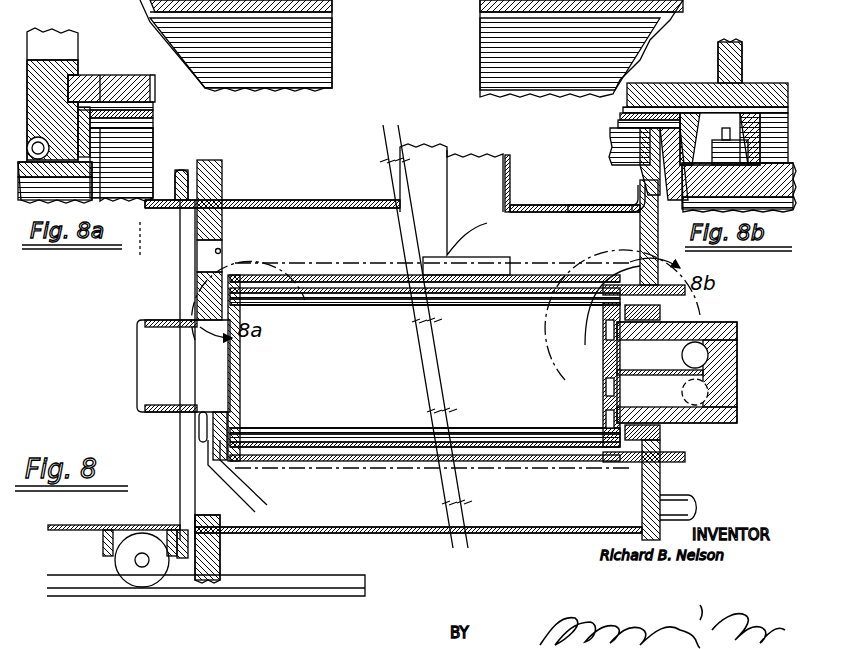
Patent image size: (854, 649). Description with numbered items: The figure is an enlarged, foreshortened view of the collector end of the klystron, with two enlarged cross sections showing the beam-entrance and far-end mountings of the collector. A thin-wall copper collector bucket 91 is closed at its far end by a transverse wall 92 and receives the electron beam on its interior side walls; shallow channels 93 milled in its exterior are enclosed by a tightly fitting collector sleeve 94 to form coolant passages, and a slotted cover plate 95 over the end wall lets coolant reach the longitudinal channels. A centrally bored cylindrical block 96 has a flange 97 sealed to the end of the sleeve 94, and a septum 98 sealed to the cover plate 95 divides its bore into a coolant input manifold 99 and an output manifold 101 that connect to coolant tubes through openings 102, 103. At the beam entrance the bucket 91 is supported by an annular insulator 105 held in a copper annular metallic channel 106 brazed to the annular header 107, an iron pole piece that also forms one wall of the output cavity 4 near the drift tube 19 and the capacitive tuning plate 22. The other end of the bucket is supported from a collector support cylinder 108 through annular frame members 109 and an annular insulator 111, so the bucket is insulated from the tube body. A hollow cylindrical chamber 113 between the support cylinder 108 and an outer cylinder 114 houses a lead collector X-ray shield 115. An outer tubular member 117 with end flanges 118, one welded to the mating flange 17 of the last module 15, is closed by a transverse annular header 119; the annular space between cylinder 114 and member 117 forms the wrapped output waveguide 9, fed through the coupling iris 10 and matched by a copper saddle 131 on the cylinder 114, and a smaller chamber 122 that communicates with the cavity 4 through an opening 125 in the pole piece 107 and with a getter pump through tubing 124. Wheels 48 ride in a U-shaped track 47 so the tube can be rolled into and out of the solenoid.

In FIG. 8, the cavity resonator 4 is at (152, 292).
In FIG. 8, the wrapped output waveguide 9 is at (276, 228).
In FIG. 8, the coupling iris 10 is at (222, 252).
In FIG. 8, the module 15 is at (62, 535).
In FIG. 8, the mating flange 17 is at (180, 562).
In FIG. 8, the drift tube 19 is at (686, 10).
In FIG. 8, the capacitive tuning plate 22 is at (416, 0).
In FIG. 8, the U-shaped track 47 is at (303, 592).
In FIG. 8, the wheel 48 is at (120, 566).
In FIG. 8A, the collector bucket 91 is at (153, 130).
In FIG. 8B, the collector bucket 91 is at (612, 136).
In FIG. 8, the collector bucket 91 is at (370, 308).
In FIG. 8B, the transverse wall 92 is at (640, 163).
In FIG. 8, the transverse wall 92 is at (603, 360).
In FIG. 8A, the channel 93 is at (153, 123).
In FIG. 8B, the channel 93 is at (618, 124).
In FIG. 8, the channel 93 is at (290, 434).
In FIG. 8A, the collector sleeve 94 is at (153, 113).
In FIG. 8B, the collector sleeve 94 is at (620, 116).
In FIG. 8, the collector sleeve 94 is at (348, 434).
In FIG. 8B, the cover plate 95 is at (660, 169).
In FIG. 8, the cover plate 95 is at (605, 394).
In FIG. 8B, the cylindrical block 96 is at (760, 190).
In FIG. 8, the cylindrical block 96 is at (737, 406).
In FIG. 8B, the flange 97 is at (688, 100).
In FIG. 8, the flange 97 is at (618, 282).
In FIG. 8, the septum 98 is at (683, 423).
In FIG. 8, the coolant input manifold 99 is at (681, 363).
In FIG. 8, the output manifold 101 is at (666, 397).
In FIG. 8, the opening 102 is at (712, 355).
In FIG. 8, the opening 103 is at (712, 390).
In FIG. 8A, the annular insulator 105 is at (90, 94).
In FIG. 8A, the annular metallic channel 106 is at (85, 77).
In FIG. 8A, the annular header 107 is at (50, 124).
In FIG. 8, the annular header 107 is at (215, 255).
In FIG. 8A, the collector support cylinder 108 is at (153, 105).
In FIG. 8B, the collector support cylinder 108 is at (686, 107).
In FIG. 8, the collector support cylinder 108 is at (316, 287).
In FIG. 8B, the annular frame member 109 is at (706, 165).
In FIG. 8B, the annular insulator 111 is at (722, 148).
In FIG. 8A, the hollow cylindrical chamber 113 is at (150, 80).
In FIG. 8A, the outer cylinder 114 is at (125, 75).
In FIG. 8B, the outer cylinder 114 is at (636, 83).
In FIG. 8, the outer cylinder 114 is at (532, 275).
In FIG. 8A, the collector X-ray shield 115 is at (155, 90).
In FIG. 8B, the collector X-ray shield 115 is at (758, 85).
In FIG. 8, the collector X-ray shield 115 is at (512, 433).
In FIG. 8, the outer tubular member 117 is at (348, 207).
In FIG. 8B, the flange 118 is at (636, 193).
In FIG. 8, the flange 118 is at (204, 162).
In FIG. 8, the transverse annular header 119 is at (650, 215).
In FIG. 8, the chamber 122 is at (397, 513).
In FIG. 8, the tubing 124 is at (690, 498).
In FIG. 8, the opening 125 is at (203, 496).
In FIG. 8, the saddle 131 is at (486, 258).